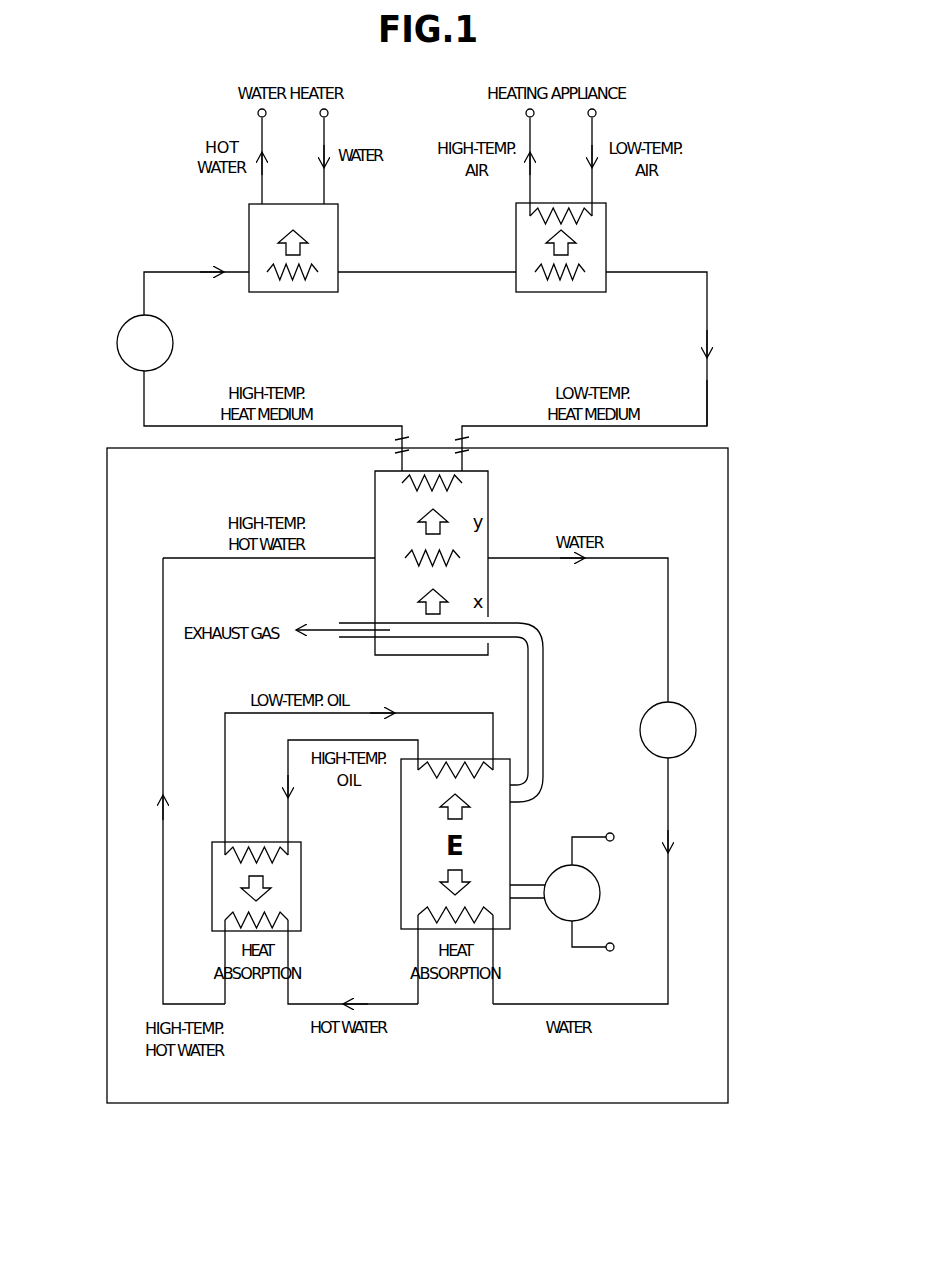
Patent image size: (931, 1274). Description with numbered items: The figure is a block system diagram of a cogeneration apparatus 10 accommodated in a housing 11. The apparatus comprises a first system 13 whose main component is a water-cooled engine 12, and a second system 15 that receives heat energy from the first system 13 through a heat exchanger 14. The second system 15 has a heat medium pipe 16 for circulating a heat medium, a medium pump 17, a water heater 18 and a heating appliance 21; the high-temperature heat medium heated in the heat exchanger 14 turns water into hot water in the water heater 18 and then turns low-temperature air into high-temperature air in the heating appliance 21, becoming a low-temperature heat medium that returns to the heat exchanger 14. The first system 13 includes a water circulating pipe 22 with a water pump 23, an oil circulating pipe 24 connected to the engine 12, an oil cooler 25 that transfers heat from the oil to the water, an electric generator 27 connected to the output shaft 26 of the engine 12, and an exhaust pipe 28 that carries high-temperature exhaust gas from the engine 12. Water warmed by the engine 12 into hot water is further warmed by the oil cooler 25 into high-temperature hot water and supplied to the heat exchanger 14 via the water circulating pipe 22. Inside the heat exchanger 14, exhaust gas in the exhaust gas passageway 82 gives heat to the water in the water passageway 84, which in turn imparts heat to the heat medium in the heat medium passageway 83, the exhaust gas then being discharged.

The cogeneration apparatus 10 is at (122, 122).
The housing 11 is at (728, 792).
The engine 12 is at (401, 845).
The first system 13 is at (686, 567).
The heat exchanger 14 is at (488, 510).
The second system 15 is at (722, 316).
The heat medium pipe 16 is at (707, 394).
The medium pump 17 is at (117, 343).
The water heater 18 is at (249, 246).
The heating appliance 21 is at (606, 263).
The water circulating pipe 22 is at (668, 607).
The water pump 23 is at (645, 717).
The oil circulating pipe 24 is at (225, 790).
The oil cooler 25 is at (212, 862).
The output shaft 26 is at (522, 885).
The electric generator 27 is at (600, 893).
The exhaust pipe 28 is at (543, 650).
The exhaust gas passageway 82 is at (433, 640).
The heat medium passageway 83 is at (402, 492).
The water passageway 84 is at (412, 562).